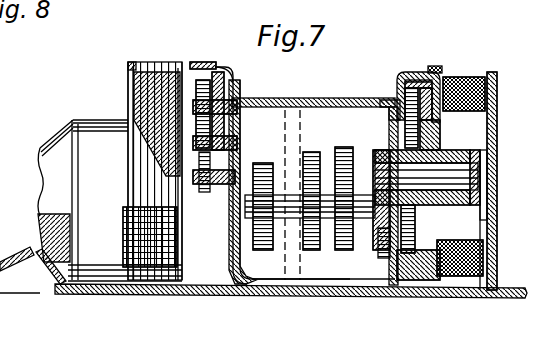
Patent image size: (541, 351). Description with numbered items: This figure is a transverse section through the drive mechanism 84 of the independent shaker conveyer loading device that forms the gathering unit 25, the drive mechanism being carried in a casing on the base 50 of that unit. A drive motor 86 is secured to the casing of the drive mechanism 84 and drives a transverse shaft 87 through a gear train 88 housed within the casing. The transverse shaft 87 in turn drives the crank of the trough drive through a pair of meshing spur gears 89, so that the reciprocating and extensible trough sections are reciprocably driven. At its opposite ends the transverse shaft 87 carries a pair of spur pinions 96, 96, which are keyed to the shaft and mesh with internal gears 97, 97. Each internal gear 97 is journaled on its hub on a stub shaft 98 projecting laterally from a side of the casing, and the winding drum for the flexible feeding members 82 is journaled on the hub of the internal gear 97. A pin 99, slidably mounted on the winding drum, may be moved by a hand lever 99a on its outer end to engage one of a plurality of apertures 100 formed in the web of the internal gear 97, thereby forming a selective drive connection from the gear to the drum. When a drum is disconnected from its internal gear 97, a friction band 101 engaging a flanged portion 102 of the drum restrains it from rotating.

The gathering unit 25 is at (46, 273).
The base 50 is at (494, 292).
The flexible feeding members 82 is at (128, 66).
The drive mechanism 84 is at (343, 85).
The drive motor 86 is at (56, 147).
The transverse shaft 87 is at (290, 173).
The gear train 88 is at (314, 152).
The meshing spur gears 89 is at (298, 268).
The spur pinions 96 is at (136, 211).
The internal gears 97 is at (229, 84).
The stub shafts 98 is at (410, 165).
The pin 99 is at (458, 210).
The hand lever 99a is at (493, 166).
The apertures 100 is at (436, 134).
The friction bands 101 is at (200, 58).
The flanged portion 102 is at (218, 66).